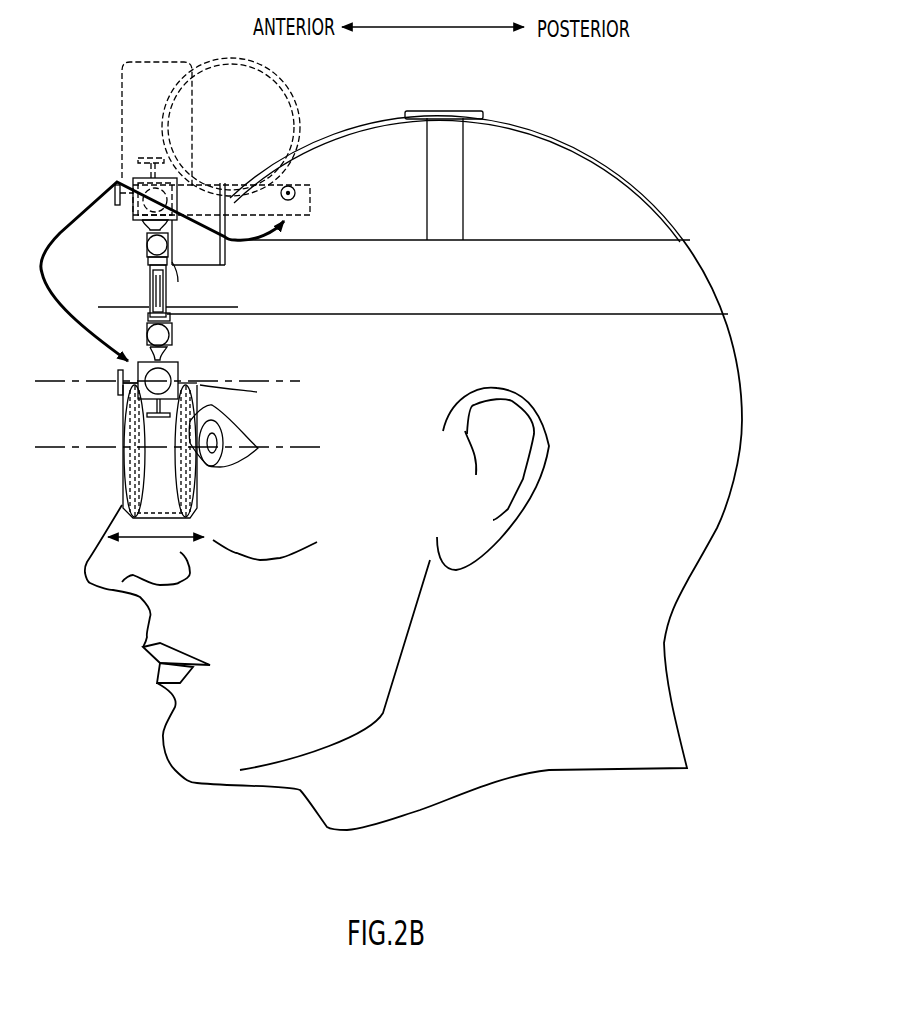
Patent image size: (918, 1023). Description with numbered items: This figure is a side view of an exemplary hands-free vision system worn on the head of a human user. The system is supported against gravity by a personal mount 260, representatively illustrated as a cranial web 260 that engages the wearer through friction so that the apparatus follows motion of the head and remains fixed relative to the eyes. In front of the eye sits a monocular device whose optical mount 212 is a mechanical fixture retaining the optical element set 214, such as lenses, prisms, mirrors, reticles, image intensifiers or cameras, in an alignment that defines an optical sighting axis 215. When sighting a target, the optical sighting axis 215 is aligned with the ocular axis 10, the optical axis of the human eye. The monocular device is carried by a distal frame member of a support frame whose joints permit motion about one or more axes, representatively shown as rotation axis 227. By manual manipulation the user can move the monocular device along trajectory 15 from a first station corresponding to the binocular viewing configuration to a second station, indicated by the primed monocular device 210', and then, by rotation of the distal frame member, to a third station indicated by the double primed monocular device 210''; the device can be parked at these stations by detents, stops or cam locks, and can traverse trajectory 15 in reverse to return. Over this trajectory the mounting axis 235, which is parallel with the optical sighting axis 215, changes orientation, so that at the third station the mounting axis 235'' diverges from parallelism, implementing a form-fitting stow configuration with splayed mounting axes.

The ocular axis 10 is at (287, 446).
The trajectory 15 is at (58, 233).
The monocular device at second station 210' is at (148, 103).
The monocular device at third station 210'' is at (256, 127).
The optical mount 212 is at (195, 512).
The optical element set 214 is at (100, 476).
The optical sighting axis 215 is at (82, 445).
The rotation axis 227 is at (218, 306).
The mounting axis 235 is at (251, 379).
The mounting axis at third station 235'' is at (248, 198).
The personal mount 260 is at (677, 270).